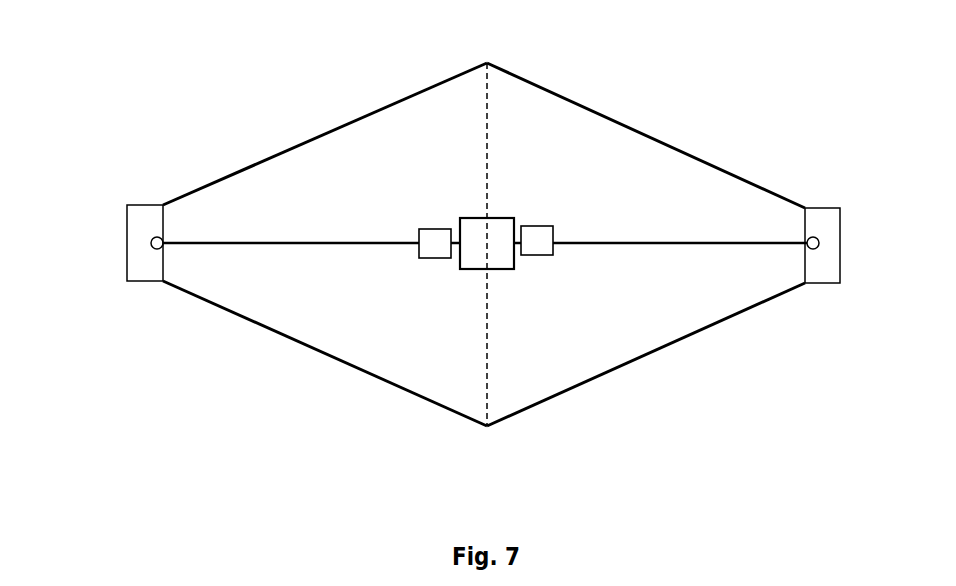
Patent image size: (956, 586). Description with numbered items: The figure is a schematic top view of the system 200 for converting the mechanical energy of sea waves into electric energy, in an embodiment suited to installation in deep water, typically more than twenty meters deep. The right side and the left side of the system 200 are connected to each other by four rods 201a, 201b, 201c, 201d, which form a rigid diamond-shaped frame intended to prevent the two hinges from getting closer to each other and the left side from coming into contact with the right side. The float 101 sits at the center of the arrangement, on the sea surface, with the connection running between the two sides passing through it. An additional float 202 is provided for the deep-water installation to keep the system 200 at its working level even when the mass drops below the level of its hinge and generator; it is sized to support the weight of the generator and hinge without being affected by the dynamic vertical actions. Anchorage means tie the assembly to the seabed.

The system 200 is at (443, 231).
The rod 201a is at (315, 138).
The rod 201b is at (655, 139).
The rod 201c is at (348, 365).
The rod 201d is at (655, 351).
The additional float 202 is at (488, 157).
The float 101 is at (505, 218).